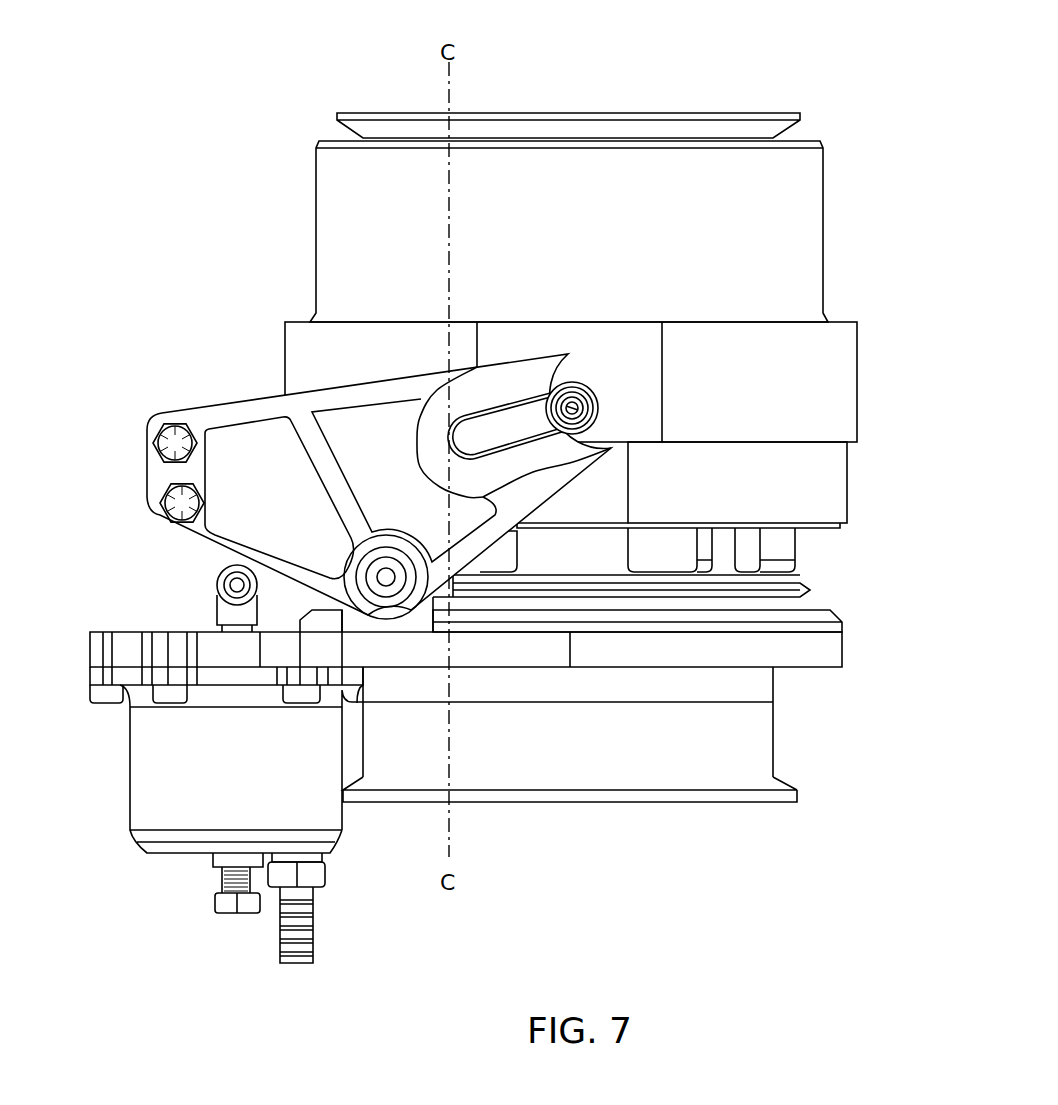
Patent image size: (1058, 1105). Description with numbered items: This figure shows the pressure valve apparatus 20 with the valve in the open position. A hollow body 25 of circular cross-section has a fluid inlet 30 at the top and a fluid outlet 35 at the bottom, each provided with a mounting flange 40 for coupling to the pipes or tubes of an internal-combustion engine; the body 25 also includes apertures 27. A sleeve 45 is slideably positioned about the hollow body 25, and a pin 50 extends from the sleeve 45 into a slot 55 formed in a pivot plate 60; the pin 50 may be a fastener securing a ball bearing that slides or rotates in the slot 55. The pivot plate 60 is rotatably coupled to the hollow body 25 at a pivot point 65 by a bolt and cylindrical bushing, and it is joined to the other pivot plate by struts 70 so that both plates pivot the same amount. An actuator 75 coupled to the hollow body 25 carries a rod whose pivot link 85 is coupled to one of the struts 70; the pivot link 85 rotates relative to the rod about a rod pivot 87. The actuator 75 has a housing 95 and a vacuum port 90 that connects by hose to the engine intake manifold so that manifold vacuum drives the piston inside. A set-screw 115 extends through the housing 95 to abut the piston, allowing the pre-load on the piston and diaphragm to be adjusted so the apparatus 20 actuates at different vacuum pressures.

The pressure valve apparatus 20 is at (908, 803).
The hollow body 25 is at (564, 225).
The apertures 27 is at (667, 548).
The fluid inlet 30 is at (571, 235).
The fluid outlet 35 is at (523, 808).
The mounting flange 40 is at (800, 118).
The sleeve 45 is at (771, 395).
The pin 50 is at (597, 398).
The slot 55 is at (518, 412).
The pivot plate 60 is at (392, 465).
The pivot point 65 is at (388, 575).
The struts 70 is at (177, 433).
The actuator 75 is at (108, 820).
The pivot link 85 is at (202, 557).
The rod pivot 87 is at (233, 585).
The vacuum port 90 is at (315, 920).
The housing 95 is at (248, 775).
The set-screw 115 is at (215, 902).